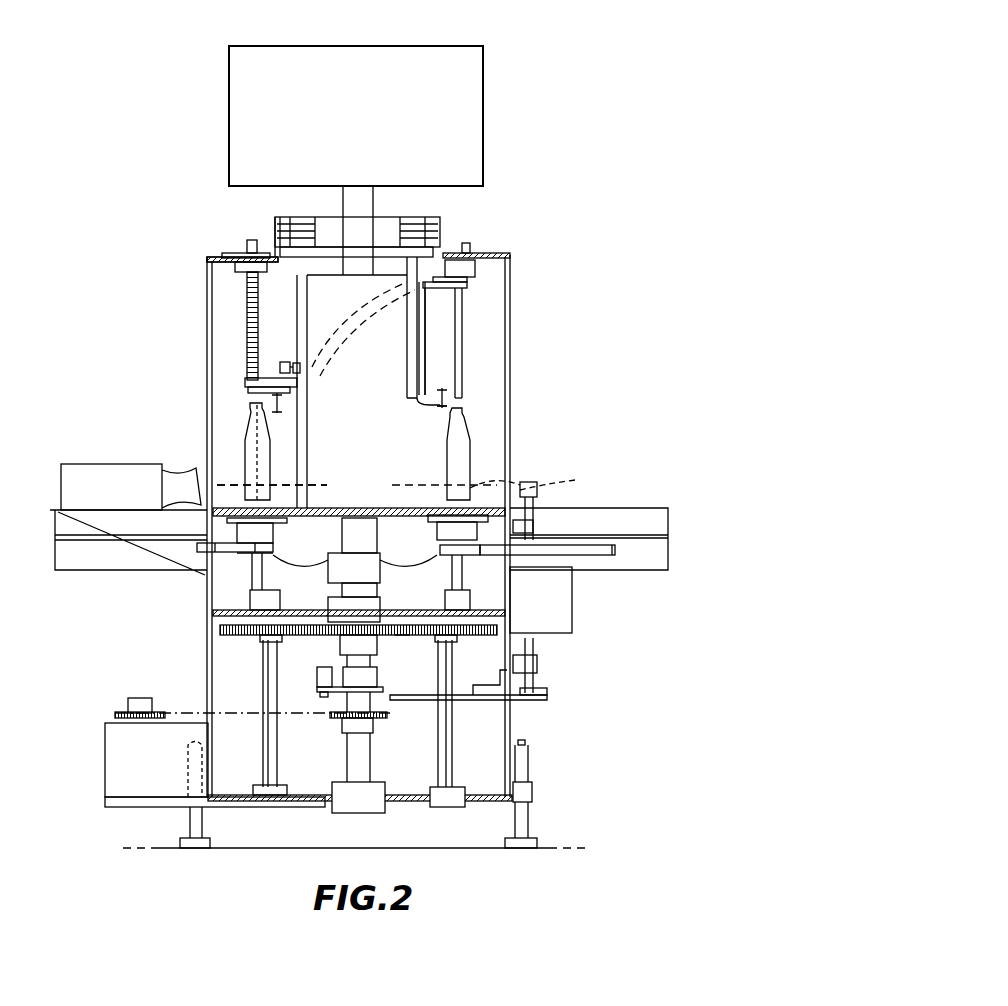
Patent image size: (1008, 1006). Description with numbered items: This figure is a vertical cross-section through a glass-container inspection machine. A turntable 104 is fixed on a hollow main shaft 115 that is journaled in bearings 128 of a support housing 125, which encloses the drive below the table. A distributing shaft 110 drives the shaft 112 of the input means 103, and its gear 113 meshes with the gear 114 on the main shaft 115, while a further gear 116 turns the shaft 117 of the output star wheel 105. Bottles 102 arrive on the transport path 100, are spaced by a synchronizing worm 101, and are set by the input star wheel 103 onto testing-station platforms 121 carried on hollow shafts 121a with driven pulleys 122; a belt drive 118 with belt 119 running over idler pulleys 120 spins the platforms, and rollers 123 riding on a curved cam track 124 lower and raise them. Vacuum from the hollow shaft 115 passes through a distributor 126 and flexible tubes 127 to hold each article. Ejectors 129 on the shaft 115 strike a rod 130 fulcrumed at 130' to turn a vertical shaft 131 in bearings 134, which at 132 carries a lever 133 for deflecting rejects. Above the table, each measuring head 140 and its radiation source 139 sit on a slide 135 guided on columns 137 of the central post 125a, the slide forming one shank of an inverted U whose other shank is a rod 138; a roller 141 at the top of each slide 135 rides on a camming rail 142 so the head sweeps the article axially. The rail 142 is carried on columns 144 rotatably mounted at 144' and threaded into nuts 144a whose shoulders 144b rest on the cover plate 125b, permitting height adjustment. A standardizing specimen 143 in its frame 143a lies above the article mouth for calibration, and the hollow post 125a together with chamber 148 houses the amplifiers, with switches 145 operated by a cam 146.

The transport path 100 is at (655, 510).
The synchronizing worm 101 is at (165, 470).
The glass article 102 is at (250, 412).
The input cruciform star wheel 103 is at (240, 485).
The turntable 104 is at (359, 499).
The output cruciform star wheel 105 is at (500, 476).
The distributing shaft 110 is at (128, 702).
The shaft of input means 112 is at (263, 698).
The gear 113 is at (218, 630).
The gear 114 is at (340, 646).
The main drive shaft 115 is at (370, 750).
The gear 116 is at (405, 636).
The shaft 117 is at (438, 676).
The belt drive 118 is at (598, 560).
The belt 119 is at (200, 546).
The idler pulley 120 is at (203, 577).
The testing station platform 121 is at (470, 468).
The shaft 121a is at (440, 548).
The driven pulley 122 is at (250, 553).
The roller 123 is at (262, 578).
The curved track 124 is at (252, 595).
The support housing 125 is at (512, 740).
The central support post 125a is at (380, 305).
The cover plate 125b is at (207, 262).
The distributor 126 is at (380, 568).
The flexible tube 127 is at (428, 562).
The bearing 128 is at (380, 818).
The ejector 129 is at (317, 677).
The rod 130 is at (468, 712).
The fulcrum 130' is at (487, 672).
The vertical shaft 131 is at (540, 686).
The arm mounting 132 is at (537, 492).
The lever 133 is at (568, 477).
The bearing 134 is at (533, 527).
The slide 135 is at (427, 344).
The column 137 is at (407, 383).
The vertically extending rod 138 is at (462, 312).
The radiation source 139 is at (457, 400).
The measuring head 140 is at (422, 400).
The roller 141 is at (285, 362).
The camming rail 142 is at (470, 278).
The standardizing specimen 143 is at (447, 392).
The frame 143a is at (440, 408).
The column 144 is at (206, 326).
The rotatable mounting 144' is at (229, 382).
The nut 144a is at (267, 268).
The shoulder 144b is at (247, 250).
The switches 145 is at (440, 222).
The cam 146 is at (277, 227).
The chamber 148 is at (483, 147).